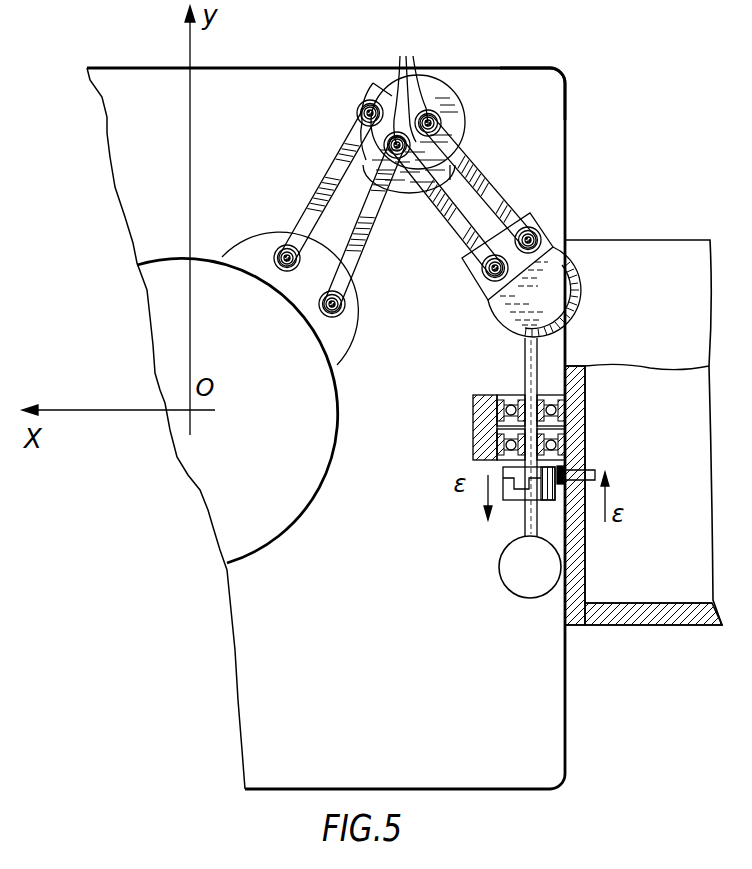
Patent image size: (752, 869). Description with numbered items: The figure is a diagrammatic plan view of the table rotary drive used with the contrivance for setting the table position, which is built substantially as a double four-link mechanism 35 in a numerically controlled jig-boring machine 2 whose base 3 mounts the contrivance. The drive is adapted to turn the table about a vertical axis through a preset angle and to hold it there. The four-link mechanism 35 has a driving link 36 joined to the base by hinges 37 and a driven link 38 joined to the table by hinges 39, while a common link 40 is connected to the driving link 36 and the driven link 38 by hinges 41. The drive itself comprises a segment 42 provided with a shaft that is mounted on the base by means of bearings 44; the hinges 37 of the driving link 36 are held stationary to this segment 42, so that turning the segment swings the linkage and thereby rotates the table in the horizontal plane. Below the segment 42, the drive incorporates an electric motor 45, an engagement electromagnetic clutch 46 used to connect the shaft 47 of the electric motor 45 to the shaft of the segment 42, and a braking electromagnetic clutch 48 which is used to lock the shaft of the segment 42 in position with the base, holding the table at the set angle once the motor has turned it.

The jig-boring machine 2 is at (553, 743).
The base 3 is at (666, 240).
The double four-link mechanism 35 is at (553, 92).
The driving link 36 is at (483, 187).
The hinges 37 is at (510, 207).
The driven link 38 is at (380, 214).
The hinges 39 is at (300, 296).
The common link 40 is at (450, 108).
The hinges 41 is at (411, 85).
The segment 42 is at (560, 278).
The bearings 44 is at (557, 412).
The electric motor 45 is at (535, 597).
The engagement electromagnetic clutch 46 is at (478, 506).
The shaft of the electric motor 47 is at (519, 519).
The braking electromagnetic clutch 48 is at (610, 483).